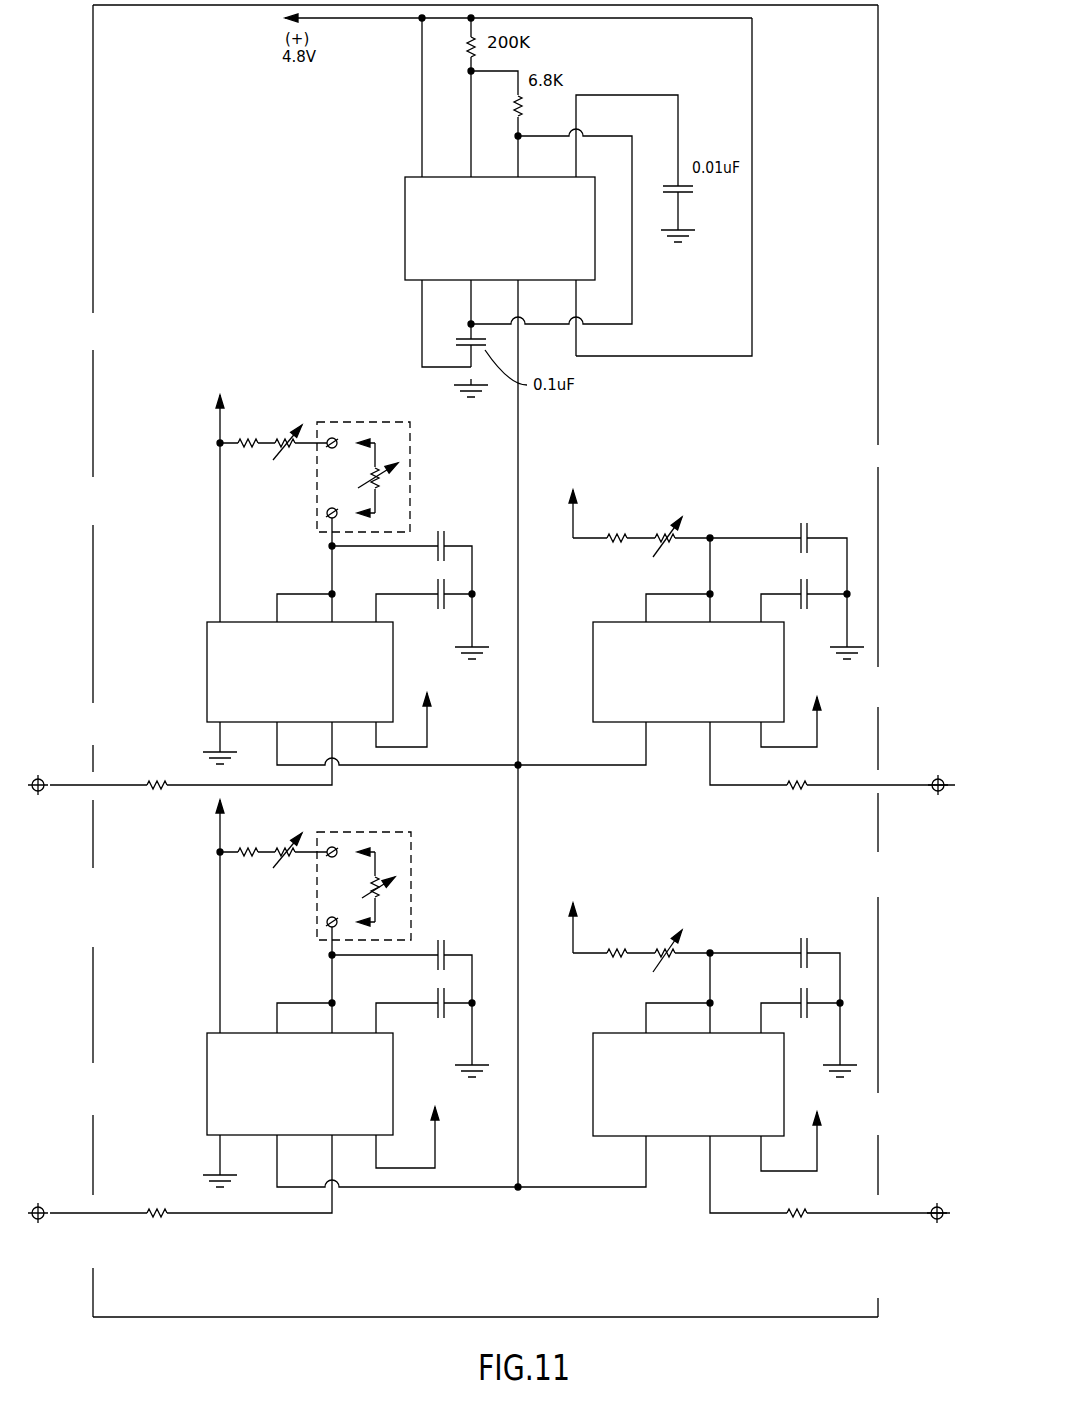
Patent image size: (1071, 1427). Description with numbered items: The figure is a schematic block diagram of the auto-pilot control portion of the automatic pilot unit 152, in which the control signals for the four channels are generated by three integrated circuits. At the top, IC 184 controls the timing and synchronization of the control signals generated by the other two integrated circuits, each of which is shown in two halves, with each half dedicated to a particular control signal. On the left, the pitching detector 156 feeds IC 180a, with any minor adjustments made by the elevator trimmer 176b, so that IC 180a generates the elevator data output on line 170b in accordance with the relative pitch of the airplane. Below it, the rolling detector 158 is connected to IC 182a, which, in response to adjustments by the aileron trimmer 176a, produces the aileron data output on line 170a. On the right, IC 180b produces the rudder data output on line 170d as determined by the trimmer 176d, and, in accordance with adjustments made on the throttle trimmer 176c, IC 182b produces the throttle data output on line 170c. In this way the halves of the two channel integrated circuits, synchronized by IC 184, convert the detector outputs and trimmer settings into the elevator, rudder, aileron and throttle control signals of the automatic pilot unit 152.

The automatic pilot unit 152 is at (93, 167).
The IC 184 is at (405, 220).
The pitching detector 156 is at (353, 418).
The elevator trimmer 176b is at (263, 473).
The IC 180a is at (207, 663).
The line 170b is at (42, 792).
The aileron trimmer 176a is at (273, 880).
The rolling detector 158 is at (300, 937).
The IC 182a is at (207, 1090).
The line 170a is at (40, 1206).
The trimmer 176d is at (885, 457).
The IC 180b is at (593, 640).
The line 170d is at (936, 791).
The throttle trimmer 176c is at (915, 882).
The IC 182b is at (593, 1066).
The line 170c is at (931, 1208).